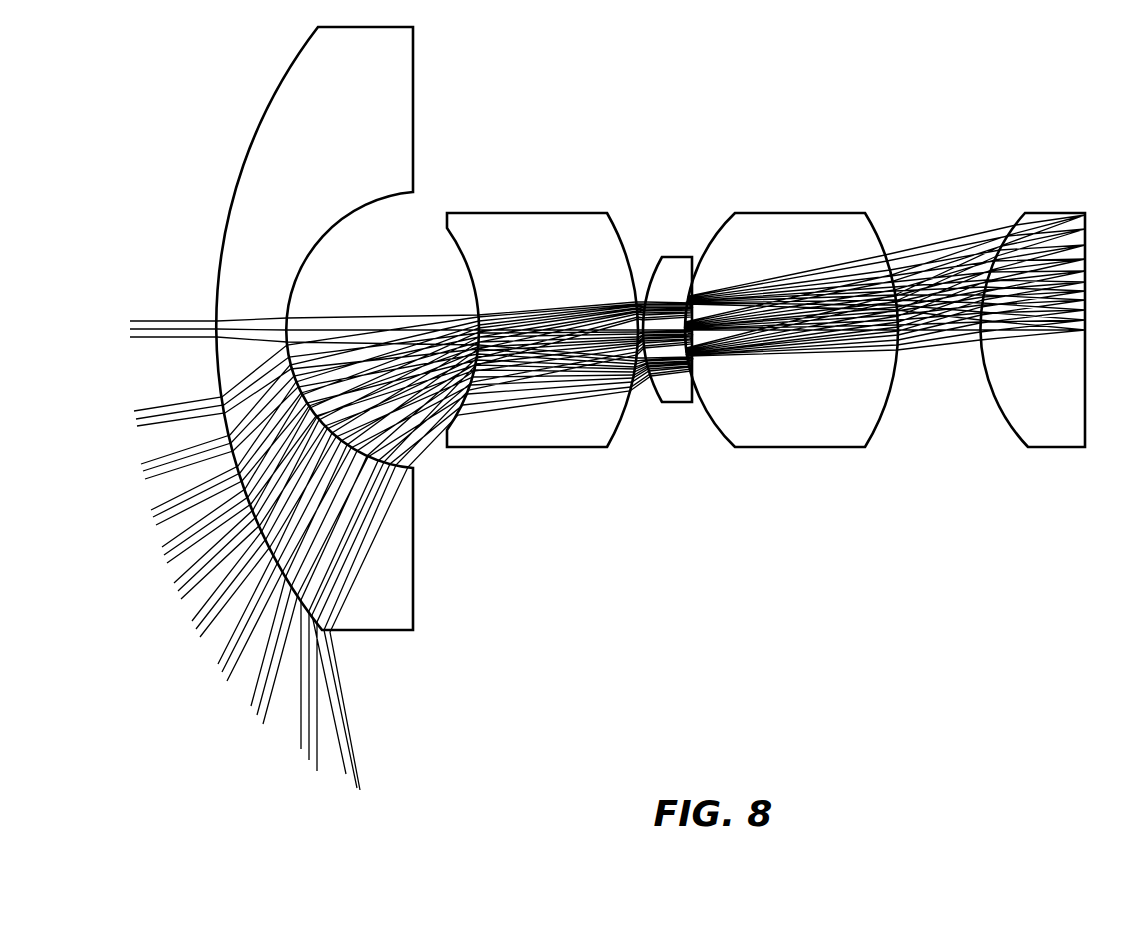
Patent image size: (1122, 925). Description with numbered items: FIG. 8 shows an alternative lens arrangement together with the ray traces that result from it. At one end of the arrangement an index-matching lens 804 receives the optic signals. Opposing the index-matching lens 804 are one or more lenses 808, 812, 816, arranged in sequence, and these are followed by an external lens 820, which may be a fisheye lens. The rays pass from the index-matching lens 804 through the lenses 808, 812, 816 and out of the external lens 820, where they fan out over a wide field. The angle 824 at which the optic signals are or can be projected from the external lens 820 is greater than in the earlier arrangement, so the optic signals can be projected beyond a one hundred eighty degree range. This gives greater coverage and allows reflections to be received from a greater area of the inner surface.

The index-matching lens 804 is at (1038, 448).
The lens 808 is at (755, 448).
The lens 812 is at (680, 403).
The lens 816 is at (535, 448).
The external lens 820 is at (414, 624).
The angle 824 is at (366, 690).